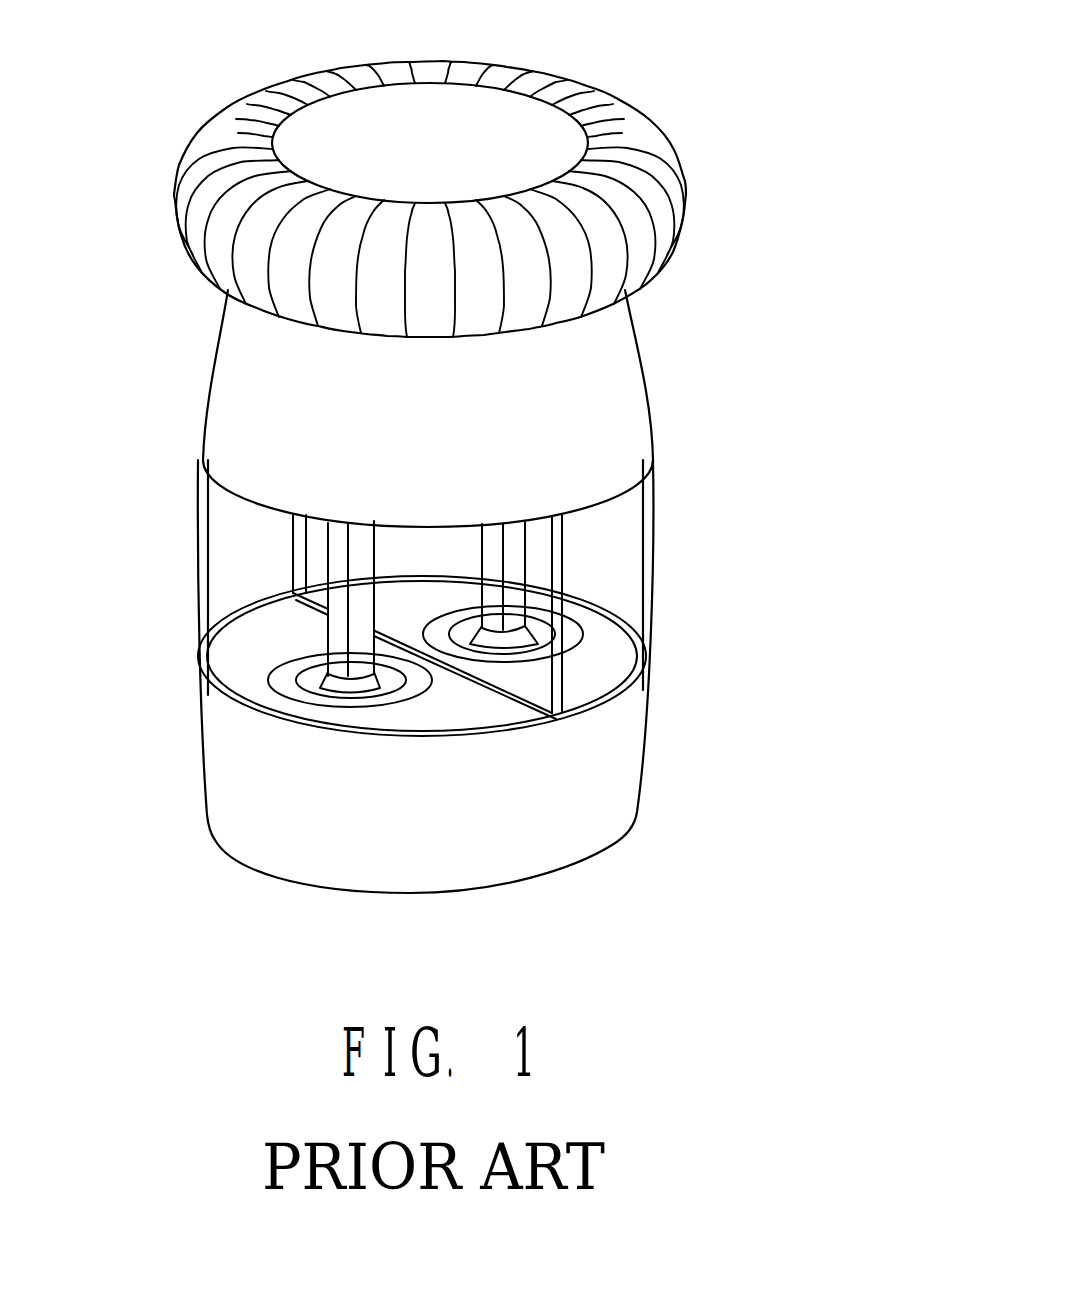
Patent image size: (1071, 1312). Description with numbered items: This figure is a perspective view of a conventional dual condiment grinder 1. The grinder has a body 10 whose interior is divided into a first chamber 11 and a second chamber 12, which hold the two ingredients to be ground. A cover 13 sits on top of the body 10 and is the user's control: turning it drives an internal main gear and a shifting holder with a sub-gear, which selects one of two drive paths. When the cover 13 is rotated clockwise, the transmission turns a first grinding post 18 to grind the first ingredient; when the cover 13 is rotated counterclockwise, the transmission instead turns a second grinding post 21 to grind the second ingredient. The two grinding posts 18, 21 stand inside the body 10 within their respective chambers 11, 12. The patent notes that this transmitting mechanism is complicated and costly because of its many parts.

The dual condiment grinder 1 is at (660, 48).
The body 10 is at (620, 337).
The first chamber 11 is at (247, 560).
The second chamber 12 is at (620, 572).
The cover 13 is at (676, 188).
The first grinding post 18 is at (512, 590).
The second grinding post 21 is at (340, 641).